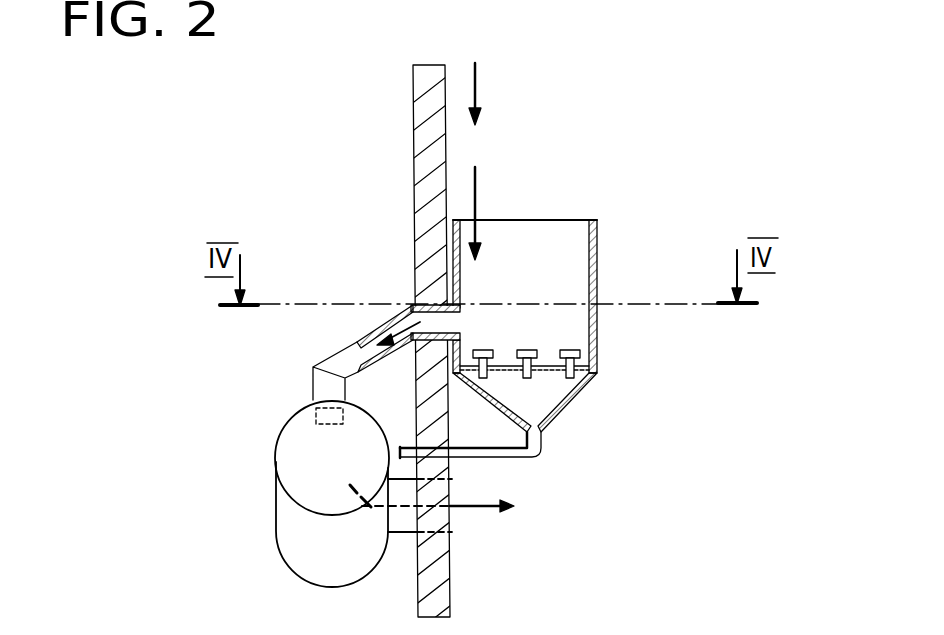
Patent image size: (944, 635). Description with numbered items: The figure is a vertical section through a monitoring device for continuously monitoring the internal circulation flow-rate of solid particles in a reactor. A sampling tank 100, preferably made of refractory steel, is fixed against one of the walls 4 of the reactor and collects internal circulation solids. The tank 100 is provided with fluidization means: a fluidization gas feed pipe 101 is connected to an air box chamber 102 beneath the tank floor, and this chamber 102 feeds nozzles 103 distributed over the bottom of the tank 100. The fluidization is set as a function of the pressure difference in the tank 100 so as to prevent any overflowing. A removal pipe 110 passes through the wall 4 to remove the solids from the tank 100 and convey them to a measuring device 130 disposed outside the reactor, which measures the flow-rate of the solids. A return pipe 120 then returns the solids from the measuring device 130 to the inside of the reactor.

The wall 4 is at (418, 155).
The sampling tank 100 is at (578, 232).
The fluidization gas feed pipe 101 is at (525, 457).
The air box chamber 102 is at (560, 407).
The nozzles 103 is at (535, 350).
The removal pipe 110 is at (365, 338).
The return pipe 120 is at (407, 520).
The measuring device 130 is at (303, 522).